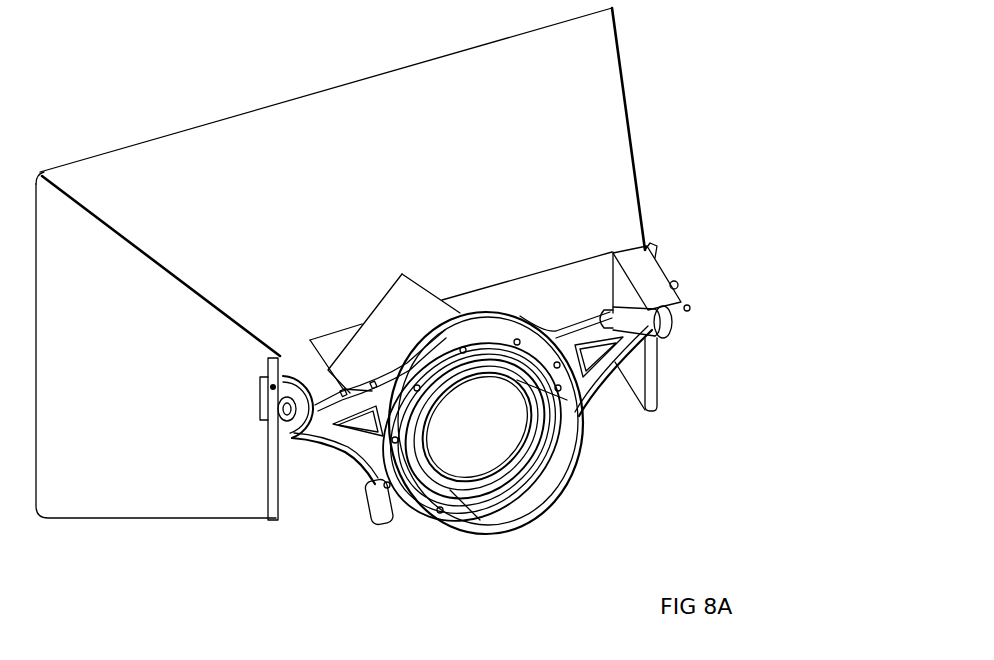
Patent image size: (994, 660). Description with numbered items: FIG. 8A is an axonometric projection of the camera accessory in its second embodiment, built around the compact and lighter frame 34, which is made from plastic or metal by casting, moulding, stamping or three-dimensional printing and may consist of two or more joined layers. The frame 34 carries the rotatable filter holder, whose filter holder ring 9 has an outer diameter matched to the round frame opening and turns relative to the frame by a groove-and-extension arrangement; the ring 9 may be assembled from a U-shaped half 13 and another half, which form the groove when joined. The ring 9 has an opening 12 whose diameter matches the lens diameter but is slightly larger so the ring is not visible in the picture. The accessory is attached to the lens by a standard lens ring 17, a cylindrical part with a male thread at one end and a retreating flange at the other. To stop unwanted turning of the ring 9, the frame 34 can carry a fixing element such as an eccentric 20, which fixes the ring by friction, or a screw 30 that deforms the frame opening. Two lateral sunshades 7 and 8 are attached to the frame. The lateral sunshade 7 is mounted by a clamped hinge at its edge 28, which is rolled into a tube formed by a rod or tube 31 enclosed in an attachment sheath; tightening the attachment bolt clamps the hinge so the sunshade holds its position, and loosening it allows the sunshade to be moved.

The lateral sunshade 7 is at (180, 242).
The lateral sunshade 8 is at (123, 487).
The filter holder ring 9 is at (496, 472).
The opening 12 is at (502, 430).
The U-shaped half 13 is at (467, 513).
The lens ring 17 is at (485, 468).
The eccentric 20 is at (380, 507).
The edge of the lateral sunshade 28 is at (272, 497).
The screw 30 is at (276, 428).
The rod or tube 31 is at (268, 407).
The frame 34 is at (342, 437).